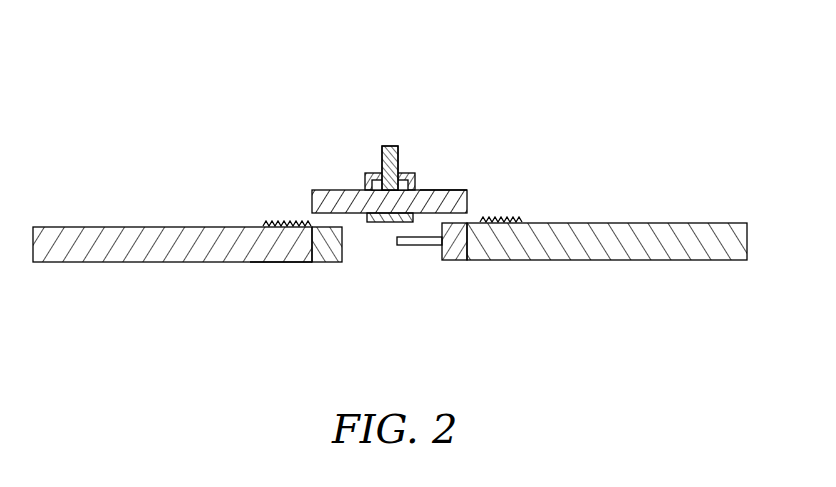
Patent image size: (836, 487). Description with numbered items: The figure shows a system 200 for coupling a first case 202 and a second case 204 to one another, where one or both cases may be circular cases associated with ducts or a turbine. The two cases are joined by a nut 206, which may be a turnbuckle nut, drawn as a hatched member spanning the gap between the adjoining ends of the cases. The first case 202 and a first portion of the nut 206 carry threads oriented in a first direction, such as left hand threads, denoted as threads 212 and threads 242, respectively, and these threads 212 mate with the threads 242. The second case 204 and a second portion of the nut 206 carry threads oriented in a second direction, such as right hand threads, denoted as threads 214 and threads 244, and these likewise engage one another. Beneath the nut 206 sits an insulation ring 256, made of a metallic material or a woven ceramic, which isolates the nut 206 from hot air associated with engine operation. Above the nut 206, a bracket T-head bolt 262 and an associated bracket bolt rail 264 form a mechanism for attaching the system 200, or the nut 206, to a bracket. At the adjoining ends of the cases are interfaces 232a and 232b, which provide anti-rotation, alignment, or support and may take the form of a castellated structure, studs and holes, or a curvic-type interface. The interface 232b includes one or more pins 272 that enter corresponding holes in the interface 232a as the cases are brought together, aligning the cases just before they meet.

The system 200 is at (597, 84).
The first case 202 is at (93, 262).
The second case 204 is at (676, 260).
The nut 206 is at (333, 190).
The threads 212 is at (279, 262).
The threads 214 is at (522, 214).
The interface 232a is at (318, 262).
The interface 232b is at (477, 260).
The threads 242 is at (312, 206).
The threads 244 is at (452, 190).
The insulation ring 256 is at (377, 222).
The bolt 262 is at (391, 146).
The bracket bolt rail 264 is at (412, 173).
The pins 272 is at (416, 246).